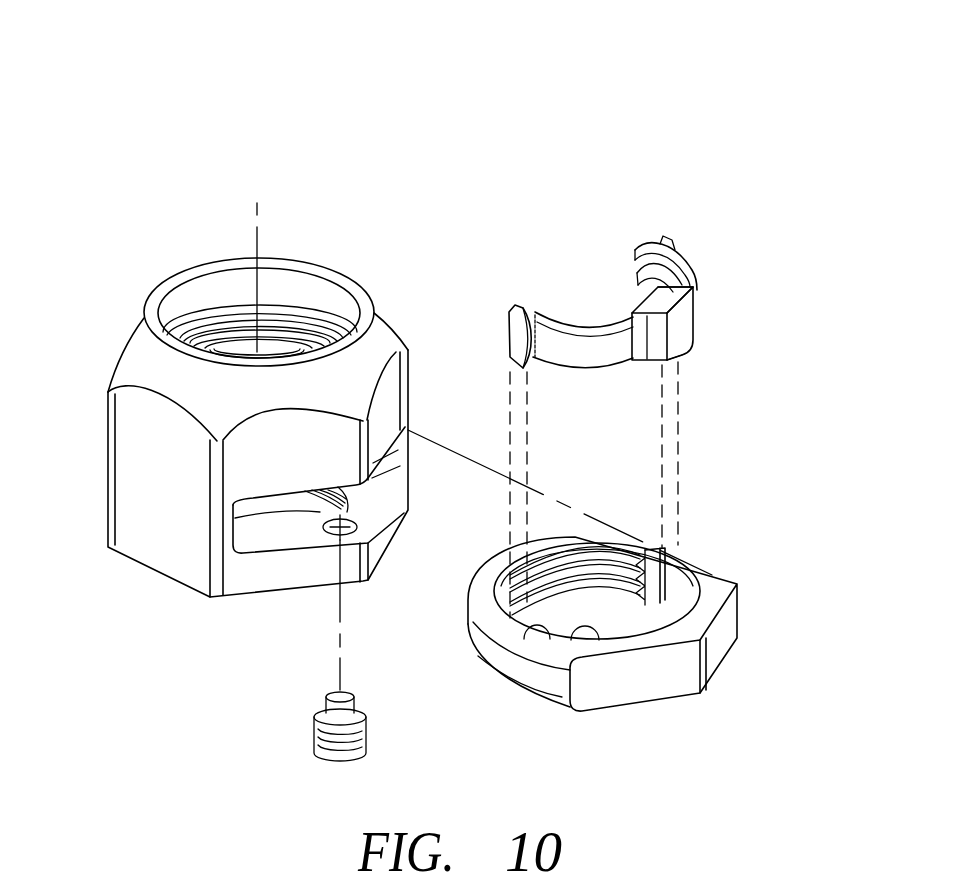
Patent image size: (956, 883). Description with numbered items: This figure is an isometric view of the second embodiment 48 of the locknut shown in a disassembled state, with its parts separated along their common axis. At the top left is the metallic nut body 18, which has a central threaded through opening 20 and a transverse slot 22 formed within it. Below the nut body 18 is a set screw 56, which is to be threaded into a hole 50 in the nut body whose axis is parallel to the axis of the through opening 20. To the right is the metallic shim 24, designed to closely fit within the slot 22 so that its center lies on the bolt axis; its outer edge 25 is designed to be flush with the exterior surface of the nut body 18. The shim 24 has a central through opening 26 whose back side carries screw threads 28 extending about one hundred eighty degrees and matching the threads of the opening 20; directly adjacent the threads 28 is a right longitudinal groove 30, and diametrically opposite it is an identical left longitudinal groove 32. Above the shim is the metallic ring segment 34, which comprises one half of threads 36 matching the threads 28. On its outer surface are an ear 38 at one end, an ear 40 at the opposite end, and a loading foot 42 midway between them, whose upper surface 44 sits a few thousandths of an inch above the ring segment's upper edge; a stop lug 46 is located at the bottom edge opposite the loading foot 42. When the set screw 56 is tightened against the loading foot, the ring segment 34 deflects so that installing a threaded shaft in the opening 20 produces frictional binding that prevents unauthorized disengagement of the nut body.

The nut body 18 is at (121, 312).
The central through opening 20 is at (213, 325).
The transverse slot 22 is at (252, 540).
The shim 24 is at (731, 567).
The outer edge 25 is at (717, 650).
The central through opening 26 is at (600, 643).
The screw threads 28 is at (593, 578).
The right longitudinal groove 30 is at (660, 610).
The left longitudinal groove 32 is at (503, 637).
The ring segment 34 is at (701, 259).
The threads 36 is at (631, 285).
The ear 38 is at (657, 240).
The ear 40 is at (517, 332).
The loading foot 42 is at (683, 322).
The upper surface 44 is at (697, 288).
The stop lug 46 is at (683, 360).
The second embodiment of locknut 48 is at (393, 171).
The hole 50 is at (322, 511).
The set screw 56 is at (313, 745).